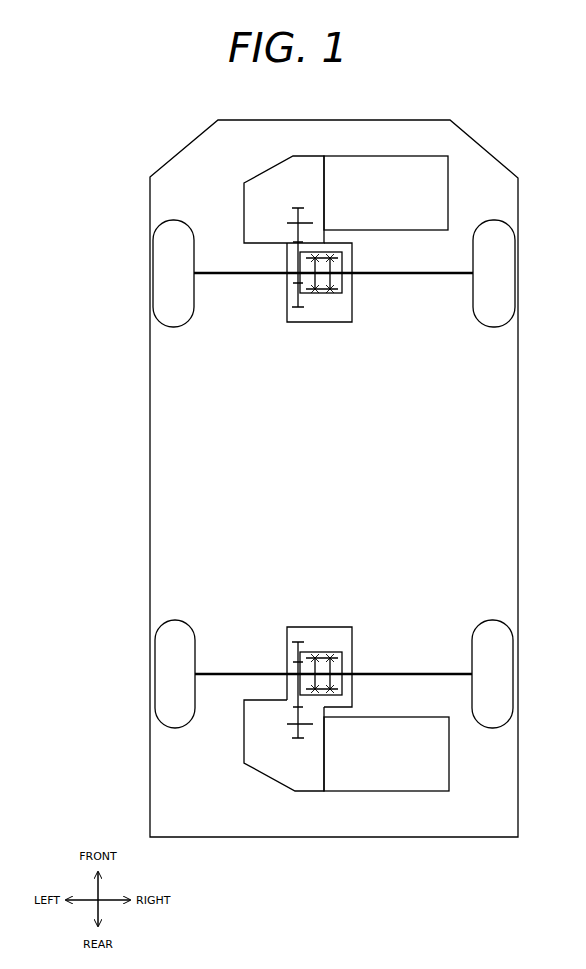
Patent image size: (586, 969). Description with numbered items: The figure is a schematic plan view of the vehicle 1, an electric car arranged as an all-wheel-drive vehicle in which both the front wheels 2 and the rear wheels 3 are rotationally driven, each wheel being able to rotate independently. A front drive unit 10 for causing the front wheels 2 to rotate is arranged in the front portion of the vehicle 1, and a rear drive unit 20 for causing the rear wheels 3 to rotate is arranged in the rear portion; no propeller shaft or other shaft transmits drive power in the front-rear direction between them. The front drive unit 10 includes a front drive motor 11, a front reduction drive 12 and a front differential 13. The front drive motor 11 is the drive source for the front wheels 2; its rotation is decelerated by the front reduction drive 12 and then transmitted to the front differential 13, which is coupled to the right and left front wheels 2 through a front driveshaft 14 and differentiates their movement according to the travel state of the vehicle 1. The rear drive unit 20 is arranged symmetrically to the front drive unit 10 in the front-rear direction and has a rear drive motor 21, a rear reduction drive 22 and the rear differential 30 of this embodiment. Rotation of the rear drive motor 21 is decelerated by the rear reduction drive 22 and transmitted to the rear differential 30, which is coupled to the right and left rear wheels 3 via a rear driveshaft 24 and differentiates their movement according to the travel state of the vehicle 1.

The vehicle 1 is at (139, 125).
The front wheels 2 is at (168, 265).
The rear wheels 3 is at (168, 663).
The front drive unit 10 is at (262, 136).
The front drive motor 11 is at (450, 190).
The front reduction drive 12 is at (243, 192).
The front differential 13 is at (286, 307).
The front driveshaft 14 is at (440, 276).
The rear drive unit 20 is at (288, 606).
The rear drive motor 21 is at (450, 751).
The rear reduction drive 22 is at (243, 756).
The rear driveshaft 24 is at (447, 672).
The rear differential 30 is at (286, 636).